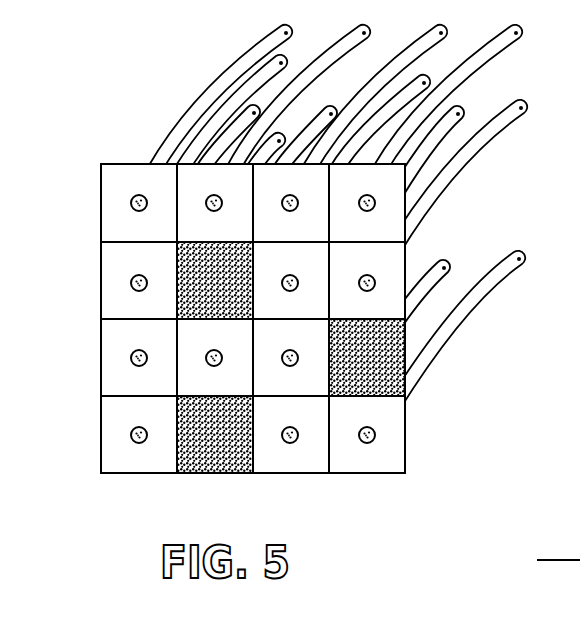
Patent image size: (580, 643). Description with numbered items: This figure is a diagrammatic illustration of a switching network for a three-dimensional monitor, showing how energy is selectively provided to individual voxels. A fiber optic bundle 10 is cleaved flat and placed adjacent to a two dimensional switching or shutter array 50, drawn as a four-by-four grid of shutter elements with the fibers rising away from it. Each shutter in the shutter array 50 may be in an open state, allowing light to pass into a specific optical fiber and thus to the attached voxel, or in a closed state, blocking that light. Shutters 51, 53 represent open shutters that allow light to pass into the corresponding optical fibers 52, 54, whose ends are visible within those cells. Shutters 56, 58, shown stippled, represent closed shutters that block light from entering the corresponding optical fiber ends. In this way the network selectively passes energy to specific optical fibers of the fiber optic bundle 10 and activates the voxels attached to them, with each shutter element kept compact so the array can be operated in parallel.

The fiber optic bundle 10 is at (204, 70).
The shutter array 50 is at (100, 441).
The open shutter 51 is at (373, 467).
The optical fiber 52 is at (373, 440).
The open shutter 53 is at (112, 302).
The optical fiber 54 is at (134, 279).
The closed shutter 56 is at (377, 397).
The closed shutter 58 is at (214, 473).